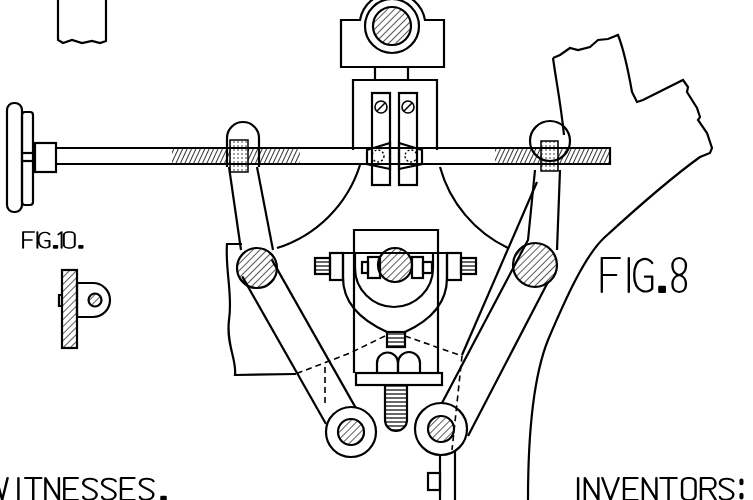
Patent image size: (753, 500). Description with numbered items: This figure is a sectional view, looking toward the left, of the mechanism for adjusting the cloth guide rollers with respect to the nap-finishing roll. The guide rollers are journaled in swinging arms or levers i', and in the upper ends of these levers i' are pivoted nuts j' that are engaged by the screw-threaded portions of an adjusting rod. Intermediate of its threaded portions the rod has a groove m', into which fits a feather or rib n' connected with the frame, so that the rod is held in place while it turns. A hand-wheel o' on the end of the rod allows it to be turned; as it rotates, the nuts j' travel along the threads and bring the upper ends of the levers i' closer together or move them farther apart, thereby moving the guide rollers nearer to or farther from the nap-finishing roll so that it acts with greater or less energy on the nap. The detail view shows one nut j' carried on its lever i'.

In FIG. 8, the hand-wheel o' is at (33, 157).
In FIG. 8, the swinging arms or levers i' is at (333, 309).
In FIG. 10, the swinging arms or levers i' is at (113, 292).
In FIG. 8, the nuts j' is at (406, 135).
In FIG. 10, the nuts j' is at (84, 300).
In FIG. 8, the feather or rib n' is at (423, 137).
In FIG. 8, the groove m' is at (425, 141).